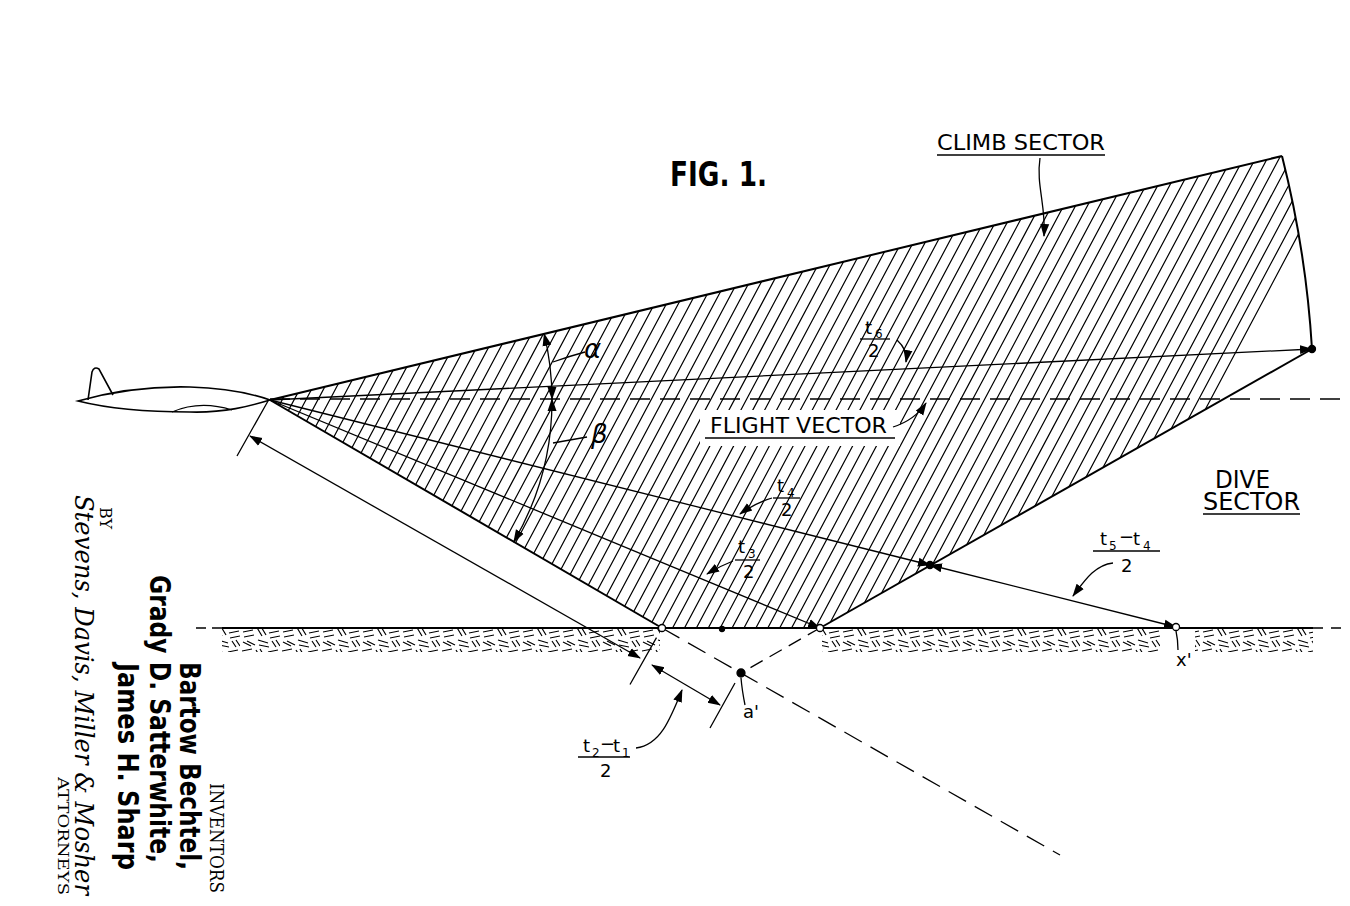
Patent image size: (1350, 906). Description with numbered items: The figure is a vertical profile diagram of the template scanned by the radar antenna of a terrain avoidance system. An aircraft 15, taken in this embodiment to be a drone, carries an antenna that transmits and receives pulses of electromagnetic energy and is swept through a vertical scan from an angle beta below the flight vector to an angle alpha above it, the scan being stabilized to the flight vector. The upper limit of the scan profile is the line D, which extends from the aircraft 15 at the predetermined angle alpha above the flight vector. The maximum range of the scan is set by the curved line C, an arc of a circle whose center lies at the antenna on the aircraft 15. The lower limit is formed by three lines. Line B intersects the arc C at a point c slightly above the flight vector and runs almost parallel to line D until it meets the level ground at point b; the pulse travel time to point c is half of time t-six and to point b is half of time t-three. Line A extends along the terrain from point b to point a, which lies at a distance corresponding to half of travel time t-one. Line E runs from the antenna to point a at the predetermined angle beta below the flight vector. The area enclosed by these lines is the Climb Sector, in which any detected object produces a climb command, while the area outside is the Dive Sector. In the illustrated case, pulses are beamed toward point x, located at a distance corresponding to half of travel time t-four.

The aircraft 15 is at (213, 398).
The line D is at (774, 272).
The arc C is at (1296, 188).
The line B is at (1113, 465).
The line E is at (478, 540).
The line A is at (724, 632).
The point a is at (663, 624).
The point b is at (822, 634).
The point c is at (1312, 353).
The point x is at (931, 561).